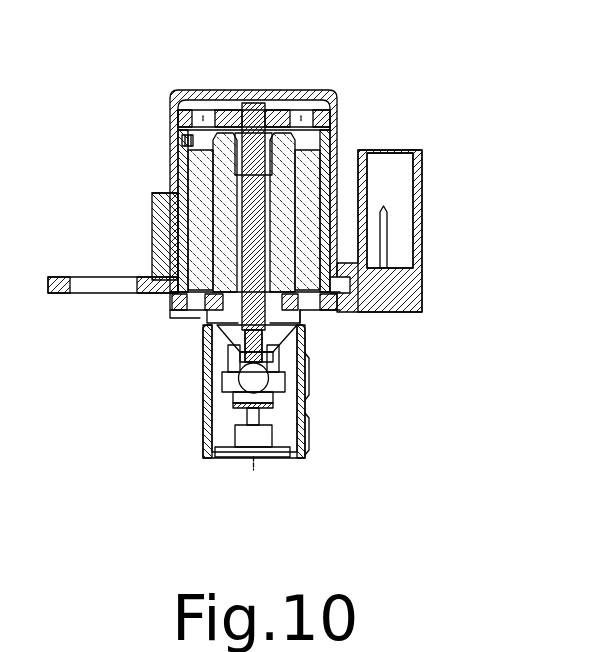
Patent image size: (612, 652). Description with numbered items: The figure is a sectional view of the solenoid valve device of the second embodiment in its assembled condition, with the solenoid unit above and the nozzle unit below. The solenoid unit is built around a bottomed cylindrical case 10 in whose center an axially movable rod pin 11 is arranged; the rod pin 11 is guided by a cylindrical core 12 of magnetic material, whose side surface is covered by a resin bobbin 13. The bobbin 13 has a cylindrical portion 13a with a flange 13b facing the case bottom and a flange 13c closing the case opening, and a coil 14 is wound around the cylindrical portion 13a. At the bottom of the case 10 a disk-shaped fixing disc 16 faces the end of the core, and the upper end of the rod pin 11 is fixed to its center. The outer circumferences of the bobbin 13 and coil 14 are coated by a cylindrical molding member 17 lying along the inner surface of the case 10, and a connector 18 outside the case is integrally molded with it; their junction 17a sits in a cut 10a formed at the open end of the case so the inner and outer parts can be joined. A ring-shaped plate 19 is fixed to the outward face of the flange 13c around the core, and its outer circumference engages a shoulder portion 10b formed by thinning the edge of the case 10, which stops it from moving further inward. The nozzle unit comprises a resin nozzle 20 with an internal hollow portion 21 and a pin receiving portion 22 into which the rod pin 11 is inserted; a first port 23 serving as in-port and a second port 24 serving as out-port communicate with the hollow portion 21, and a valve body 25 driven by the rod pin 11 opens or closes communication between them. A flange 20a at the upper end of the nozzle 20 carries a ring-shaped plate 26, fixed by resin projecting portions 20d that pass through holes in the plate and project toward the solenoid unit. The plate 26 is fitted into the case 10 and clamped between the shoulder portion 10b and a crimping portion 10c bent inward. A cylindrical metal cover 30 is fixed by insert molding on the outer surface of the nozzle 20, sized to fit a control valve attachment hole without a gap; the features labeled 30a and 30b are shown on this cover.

The case 10 is at (256, 92).
The cut 10a is at (337, 262).
The shoulder portion 10b is at (176, 293).
The crimping portion 10c is at (180, 318).
The rod pin 11 is at (244, 118).
The cylindrical core 12 is at (285, 130).
The bobbin 13 is at (212, 200).
The cylindrical portion 13a is at (185, 158).
The flange 13b is at (183, 130).
The flange 13c is at (355, 305).
The coil 14 is at (313, 140).
The fixing disc 16 is at (190, 112).
The molding member 17 is at (342, 125).
The junction 17a is at (355, 275).
The connector 18 is at (385, 165).
The plate 19 is at (176, 300).
The nozzle 20 is at (226, 358).
The flange 20a is at (317, 305).
The projecting portion 20d is at (177, 290).
The hollow portion 21 is at (241, 352).
The pin receiving portion 22 is at (268, 312).
The first port 23 is at (252, 442).
The second port 24 is at (242, 379).
The valve body 25 is at (240, 398).
The plate 26 is at (176, 307).
The metal cover 30 is at (207, 435).
The valve housing port 30a is at (300, 363).
The valve housing lower port 30b is at (302, 418).